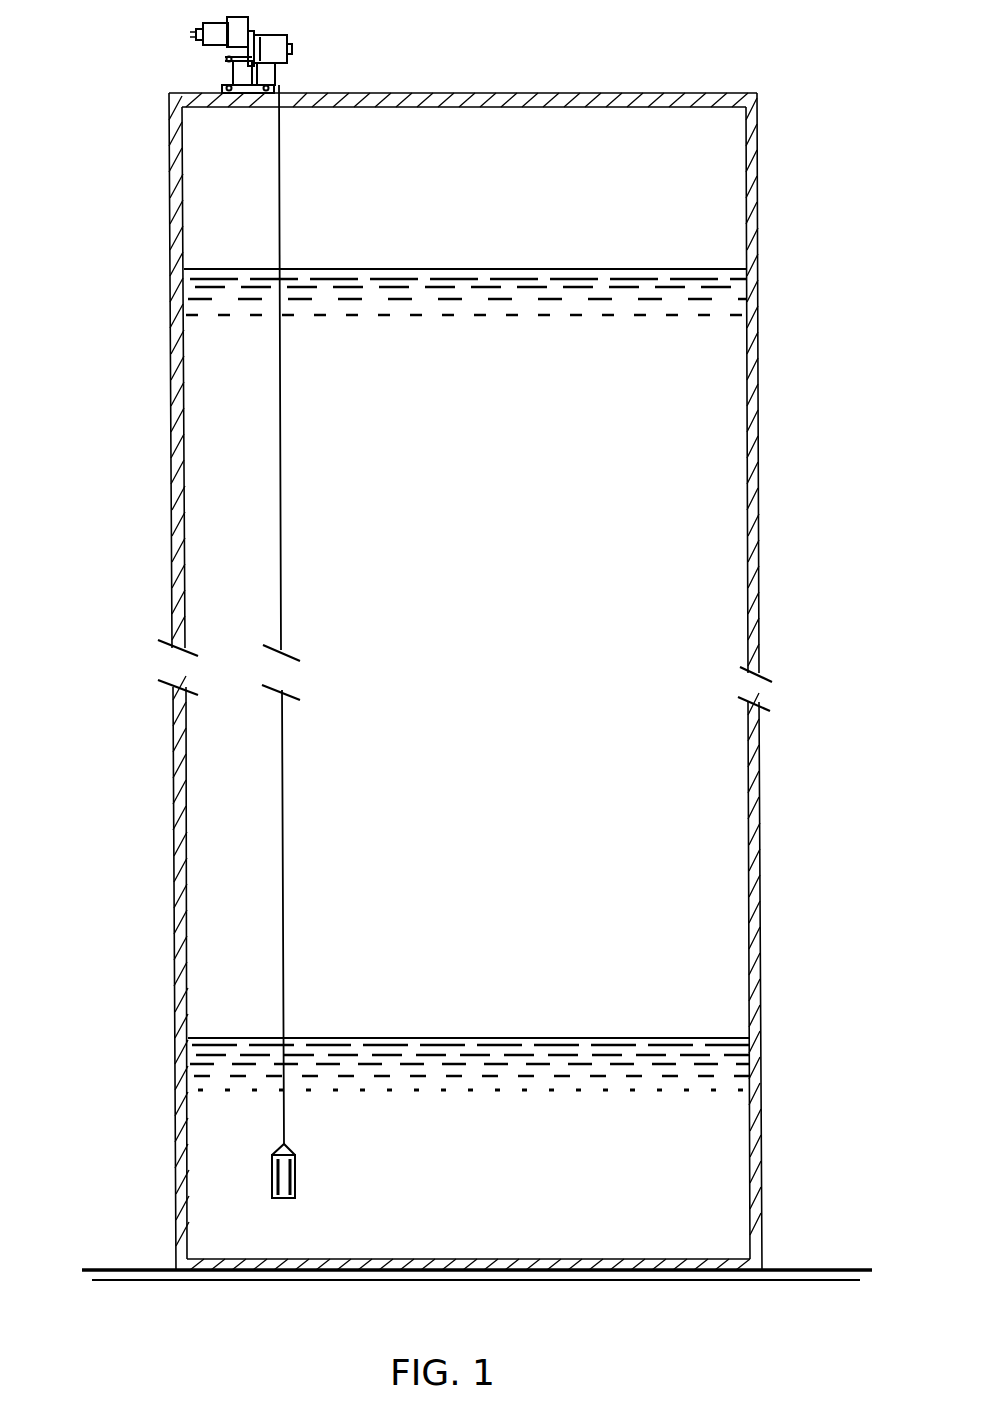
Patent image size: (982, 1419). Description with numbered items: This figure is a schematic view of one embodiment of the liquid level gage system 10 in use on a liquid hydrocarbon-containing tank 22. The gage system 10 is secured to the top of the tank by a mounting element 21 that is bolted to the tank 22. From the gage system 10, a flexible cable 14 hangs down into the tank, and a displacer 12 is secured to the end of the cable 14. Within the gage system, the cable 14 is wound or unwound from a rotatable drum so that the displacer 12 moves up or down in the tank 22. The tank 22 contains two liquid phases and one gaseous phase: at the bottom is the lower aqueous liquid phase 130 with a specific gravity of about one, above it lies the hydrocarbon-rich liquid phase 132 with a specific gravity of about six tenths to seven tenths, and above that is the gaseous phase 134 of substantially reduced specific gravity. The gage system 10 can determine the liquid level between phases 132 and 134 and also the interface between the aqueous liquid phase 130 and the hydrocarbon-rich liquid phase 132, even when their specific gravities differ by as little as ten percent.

The liquid level gage system 10 is at (344, 52).
The displacer 12 is at (296, 1184).
The flexible cable 14 is at (284, 977).
The mounting element 21 is at (205, 90).
The liquid hydrocarbon-containing tank 22 is at (168, 225).
The lower liquid phase 130 is at (603, 1185).
The hydrocarbon-rich liquid phase 132 is at (475, 862).
The gaseous phase 134 is at (485, 194).